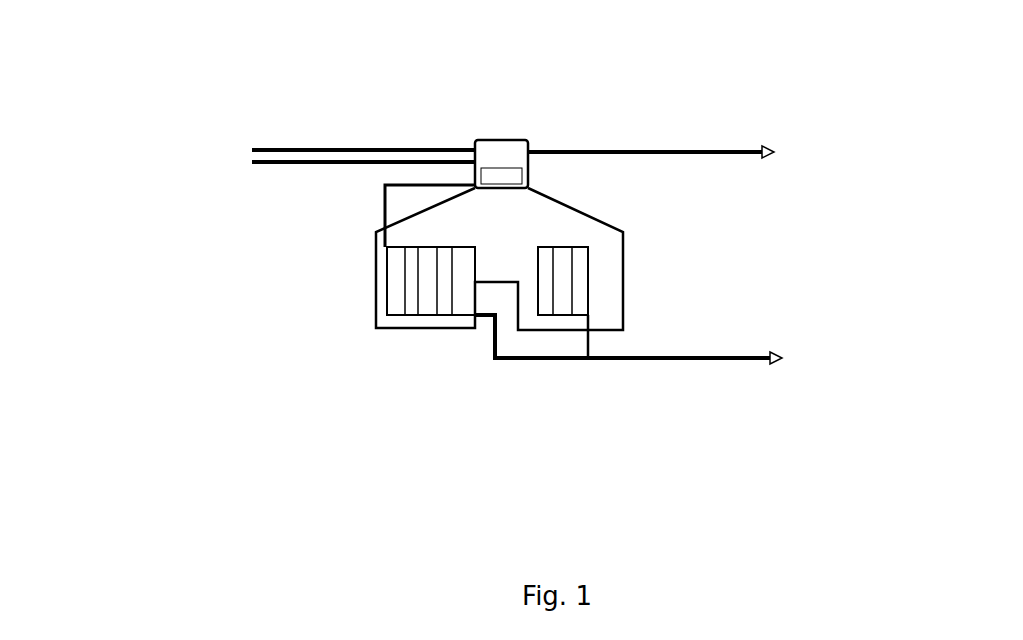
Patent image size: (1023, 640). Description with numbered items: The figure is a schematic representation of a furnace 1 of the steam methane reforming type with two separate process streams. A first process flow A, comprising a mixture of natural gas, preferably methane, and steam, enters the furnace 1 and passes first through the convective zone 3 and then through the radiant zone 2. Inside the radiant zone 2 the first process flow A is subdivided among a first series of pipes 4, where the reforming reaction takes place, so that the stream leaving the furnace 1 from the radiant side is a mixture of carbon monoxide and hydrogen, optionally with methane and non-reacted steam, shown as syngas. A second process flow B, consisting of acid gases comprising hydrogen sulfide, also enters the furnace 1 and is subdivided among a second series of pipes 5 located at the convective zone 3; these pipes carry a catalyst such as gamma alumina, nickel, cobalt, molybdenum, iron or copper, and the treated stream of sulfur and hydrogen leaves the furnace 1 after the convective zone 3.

The furnace 1 is at (830, 108).
The radiant zone 2 is at (467, 351).
The convective zone 3 is at (551, 139).
The first series of pipes 4 is at (383, 293).
The second series of pipes 5 is at (655, 157).
The first process flow A is at (246, 158).
The second process flow B is at (244, 148).